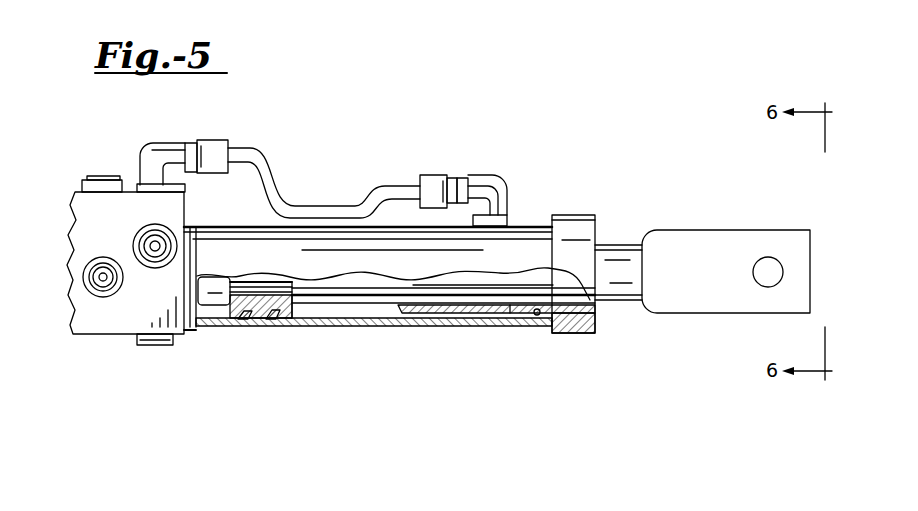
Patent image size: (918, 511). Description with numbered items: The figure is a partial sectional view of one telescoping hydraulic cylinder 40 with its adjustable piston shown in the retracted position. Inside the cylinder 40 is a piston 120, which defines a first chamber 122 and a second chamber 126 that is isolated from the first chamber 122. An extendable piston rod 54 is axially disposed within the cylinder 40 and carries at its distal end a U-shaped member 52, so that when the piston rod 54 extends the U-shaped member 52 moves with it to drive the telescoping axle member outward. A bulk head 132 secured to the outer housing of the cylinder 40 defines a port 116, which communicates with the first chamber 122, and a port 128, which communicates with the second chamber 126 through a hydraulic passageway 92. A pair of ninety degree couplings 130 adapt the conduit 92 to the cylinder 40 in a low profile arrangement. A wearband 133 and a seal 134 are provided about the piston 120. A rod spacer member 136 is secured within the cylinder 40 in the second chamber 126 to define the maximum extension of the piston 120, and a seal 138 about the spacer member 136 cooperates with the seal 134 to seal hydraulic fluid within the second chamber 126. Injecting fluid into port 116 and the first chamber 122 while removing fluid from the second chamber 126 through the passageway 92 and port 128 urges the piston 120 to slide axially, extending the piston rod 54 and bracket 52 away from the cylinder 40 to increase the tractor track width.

The telescoping hydraulic cylinder 40 is at (552, 159).
The U-shaped member 52 is at (703, 230).
The piston rod 54 is at (622, 244).
The hydraulic passageway 92 is at (384, 183).
The 90 degree couplings 130 is at (141, 142).
The bulk head 132 is at (135, 207).
The port 116 is at (97, 298).
The port 128 is at (147, 266).
The first chamber 122 is at (207, 310).
The piston 120 is at (218, 328).
The wearband 133 is at (252, 328).
The seal 134 is at (277, 328).
The second chamber 126 is at (355, 323).
The rod spacer member 136 is at (435, 327).
The seal 138 is at (535, 316).